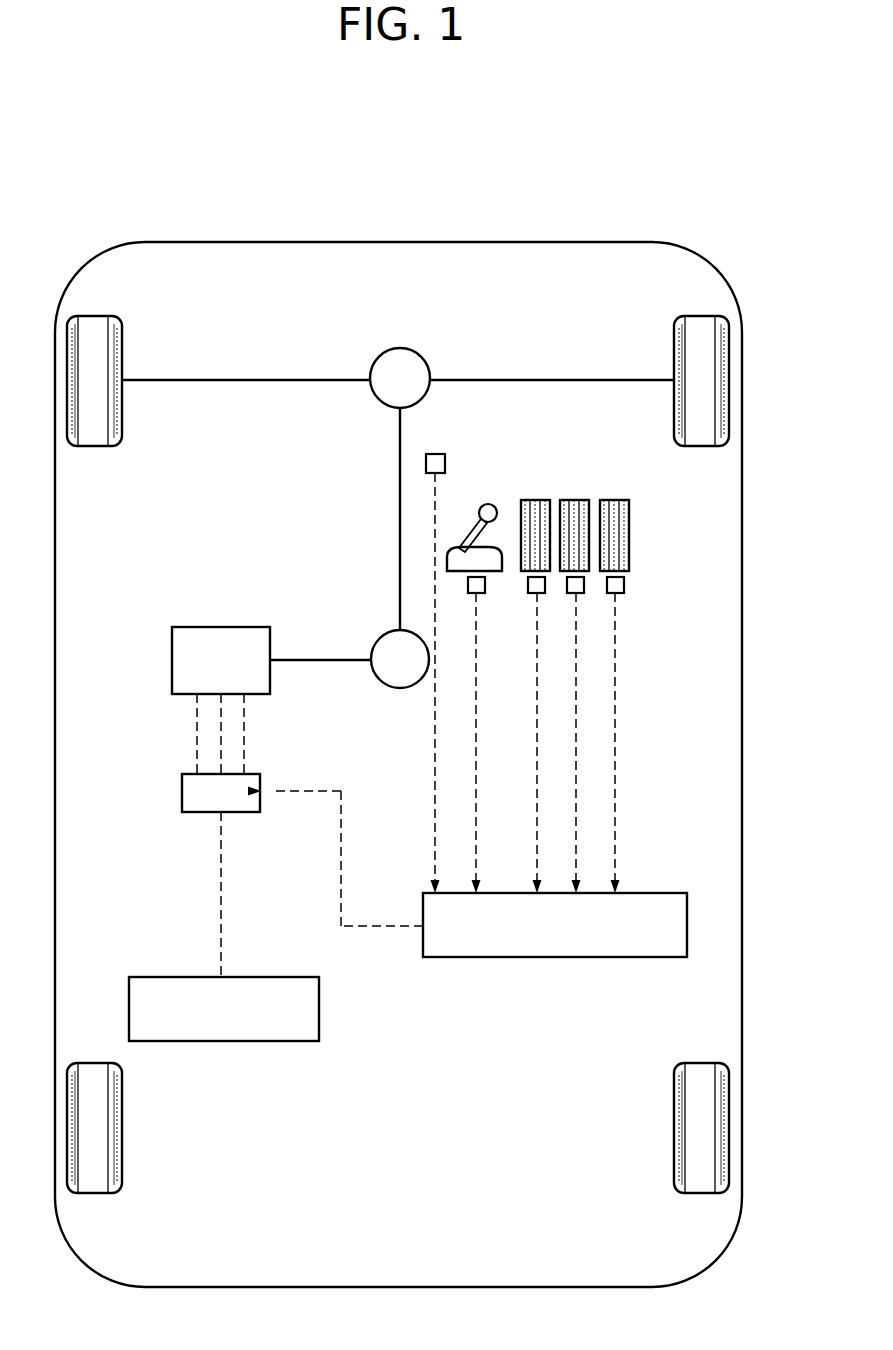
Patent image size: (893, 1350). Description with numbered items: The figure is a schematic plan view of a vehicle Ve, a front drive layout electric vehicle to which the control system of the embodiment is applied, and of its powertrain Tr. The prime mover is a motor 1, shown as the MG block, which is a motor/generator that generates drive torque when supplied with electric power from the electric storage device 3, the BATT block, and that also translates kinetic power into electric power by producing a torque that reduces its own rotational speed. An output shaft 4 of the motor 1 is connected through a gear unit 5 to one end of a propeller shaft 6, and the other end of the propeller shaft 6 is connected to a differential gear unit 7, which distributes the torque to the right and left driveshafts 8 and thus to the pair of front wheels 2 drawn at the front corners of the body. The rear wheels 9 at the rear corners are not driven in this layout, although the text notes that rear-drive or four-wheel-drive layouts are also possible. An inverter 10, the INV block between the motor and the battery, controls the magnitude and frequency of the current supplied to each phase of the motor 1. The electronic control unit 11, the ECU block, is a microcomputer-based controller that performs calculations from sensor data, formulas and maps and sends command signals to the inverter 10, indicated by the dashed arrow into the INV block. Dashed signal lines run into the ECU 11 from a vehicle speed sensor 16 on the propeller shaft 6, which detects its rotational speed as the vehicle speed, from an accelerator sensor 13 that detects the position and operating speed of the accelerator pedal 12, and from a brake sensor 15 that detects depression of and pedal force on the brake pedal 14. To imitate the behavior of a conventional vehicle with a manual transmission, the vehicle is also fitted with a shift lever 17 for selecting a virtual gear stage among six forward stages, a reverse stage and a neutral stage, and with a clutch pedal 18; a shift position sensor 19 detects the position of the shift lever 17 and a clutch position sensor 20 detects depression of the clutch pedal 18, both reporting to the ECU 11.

The vehicle Ve is at (524, 212).
The powertrain Tr is at (312, 551).
The motor 1 is at (217, 627).
The front wheels 2 is at (90, 316).
The electric storage device 3 is at (224, 1041).
The output shaft 4 is at (325, 660).
The gear unit 5 is at (398, 688).
The propeller shaft 6 is at (398, 510).
The differential gear unit 7 is at (400, 348).
The driveshafts 8 is at (249, 380).
The rear wheels 9 is at (122, 1126).
The inverter 10 is at (182, 797).
The electronic control unit 11 is at (546, 957).
The accelerator pedal 12 is at (618, 500).
The accelerator sensor 13 is at (619, 594).
The brake pedal 14 is at (578, 500).
The brake sensor 15 is at (579, 594).
The vehicle speed sensor 16 is at (436, 454).
The shift lever 17 is at (484, 504).
The clutch pedal 18 is at (540, 500).
The shift position sensor 19 is at (481, 594).
The clutch position sensor 20 is at (540, 594).